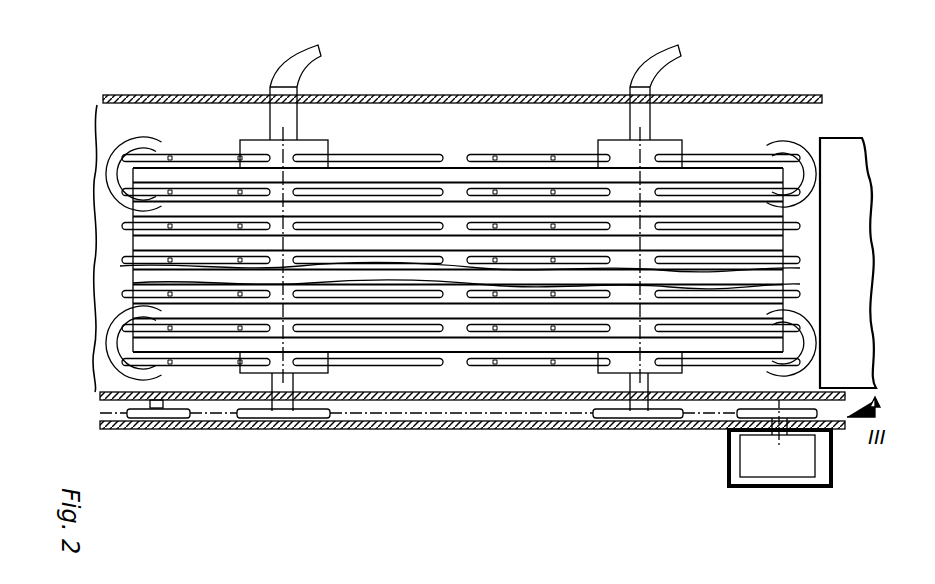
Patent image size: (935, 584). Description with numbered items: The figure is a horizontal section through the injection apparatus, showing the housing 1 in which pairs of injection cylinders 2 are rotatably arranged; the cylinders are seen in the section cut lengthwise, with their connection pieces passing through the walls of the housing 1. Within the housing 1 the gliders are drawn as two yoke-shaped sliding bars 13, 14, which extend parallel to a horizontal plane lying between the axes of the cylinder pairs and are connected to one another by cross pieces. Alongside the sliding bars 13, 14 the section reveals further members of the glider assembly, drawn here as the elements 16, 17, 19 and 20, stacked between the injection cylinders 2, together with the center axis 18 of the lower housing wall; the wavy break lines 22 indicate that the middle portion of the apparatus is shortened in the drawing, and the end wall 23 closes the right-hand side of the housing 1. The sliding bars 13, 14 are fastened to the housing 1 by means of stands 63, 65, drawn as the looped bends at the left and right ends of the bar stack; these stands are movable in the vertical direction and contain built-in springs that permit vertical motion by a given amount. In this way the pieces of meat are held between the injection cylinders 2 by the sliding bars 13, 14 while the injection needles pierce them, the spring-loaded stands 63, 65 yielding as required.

The housing 1 is at (218, 95).
The injection cylinder 2 is at (617, 150).
The sliding bar 13 is at (422, 177).
The sliding bar 14 is at (373, 342).
The plate 16 is at (413, 307).
The plate 17 is at (453, 282).
The center axis 18 is at (418, 444).
The plate 19 is at (492, 242).
The plate stack 20 is at (380, 212).
The break line 22 is at (125, 246).
The end wall 23 is at (796, 223).
The stand 63 is at (121, 150).
The stand 65 is at (800, 155).